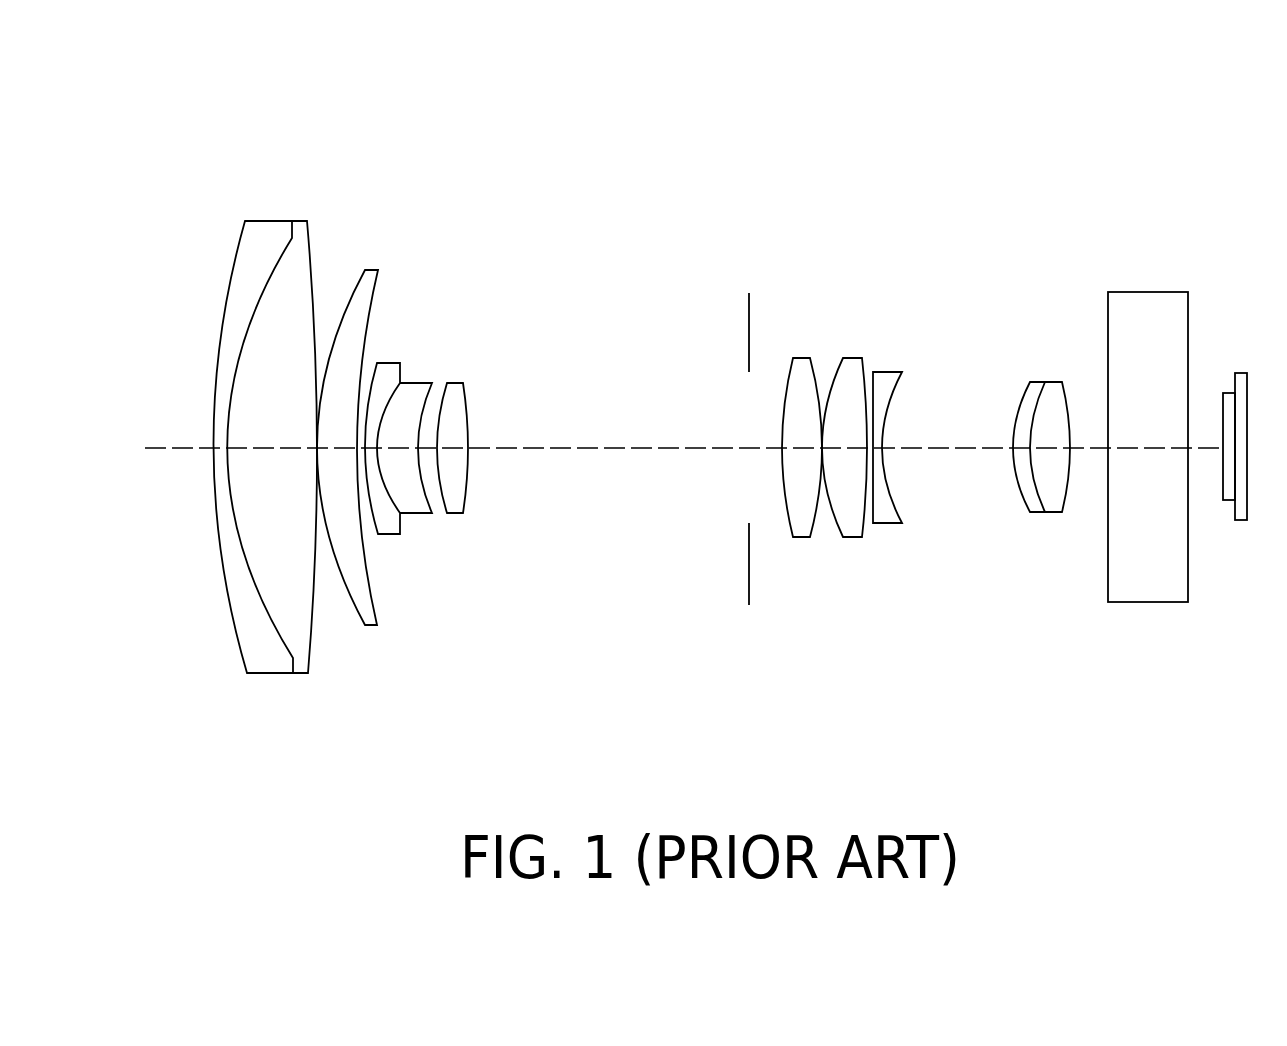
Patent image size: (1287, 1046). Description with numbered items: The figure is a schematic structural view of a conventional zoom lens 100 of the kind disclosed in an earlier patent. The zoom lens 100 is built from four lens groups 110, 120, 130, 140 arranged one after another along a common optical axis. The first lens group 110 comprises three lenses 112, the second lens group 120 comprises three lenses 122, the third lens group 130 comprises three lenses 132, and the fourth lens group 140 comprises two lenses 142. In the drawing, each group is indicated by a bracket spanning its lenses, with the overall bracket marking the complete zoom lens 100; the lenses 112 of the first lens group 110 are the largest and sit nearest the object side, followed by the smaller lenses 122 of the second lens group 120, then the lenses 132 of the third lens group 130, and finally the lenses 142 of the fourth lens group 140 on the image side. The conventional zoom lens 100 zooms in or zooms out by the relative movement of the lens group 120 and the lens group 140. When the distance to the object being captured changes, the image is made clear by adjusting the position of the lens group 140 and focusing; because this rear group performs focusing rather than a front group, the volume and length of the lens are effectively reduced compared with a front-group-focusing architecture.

The zoom lens 100 is at (1115, 95).
The lens group 110 is at (377, 200).
The lenses 112 is at (362, 605).
The lens group 120 is at (460, 200).
The lenses 122 is at (420, 503).
The lens group 130 is at (900, 200).
The lenses 132 is at (885, 510).
The lens group 140 is at (1012, 200).
The lenses 142 is at (1058, 492).